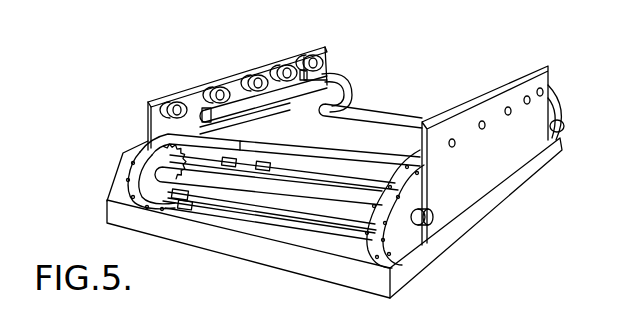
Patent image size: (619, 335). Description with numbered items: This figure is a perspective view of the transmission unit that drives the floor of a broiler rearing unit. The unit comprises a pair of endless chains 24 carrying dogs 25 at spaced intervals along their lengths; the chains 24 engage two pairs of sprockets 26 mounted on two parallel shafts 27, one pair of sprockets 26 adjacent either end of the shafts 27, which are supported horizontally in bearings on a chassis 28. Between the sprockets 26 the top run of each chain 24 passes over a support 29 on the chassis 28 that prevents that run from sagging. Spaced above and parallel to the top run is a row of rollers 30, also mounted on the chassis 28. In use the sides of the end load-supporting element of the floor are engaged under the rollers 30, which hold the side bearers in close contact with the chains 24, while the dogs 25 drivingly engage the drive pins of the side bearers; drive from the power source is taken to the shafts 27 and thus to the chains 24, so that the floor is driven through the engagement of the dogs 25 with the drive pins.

The endless chain 24 is at (268, 93).
The dog 25 is at (205, 108).
The sprocket 26 is at (317, 146).
The shaft 27 is at (299, 210).
The chassis 28 is at (525, 143).
The support 29 is at (353, 107).
The roller 30 is at (172, 105).